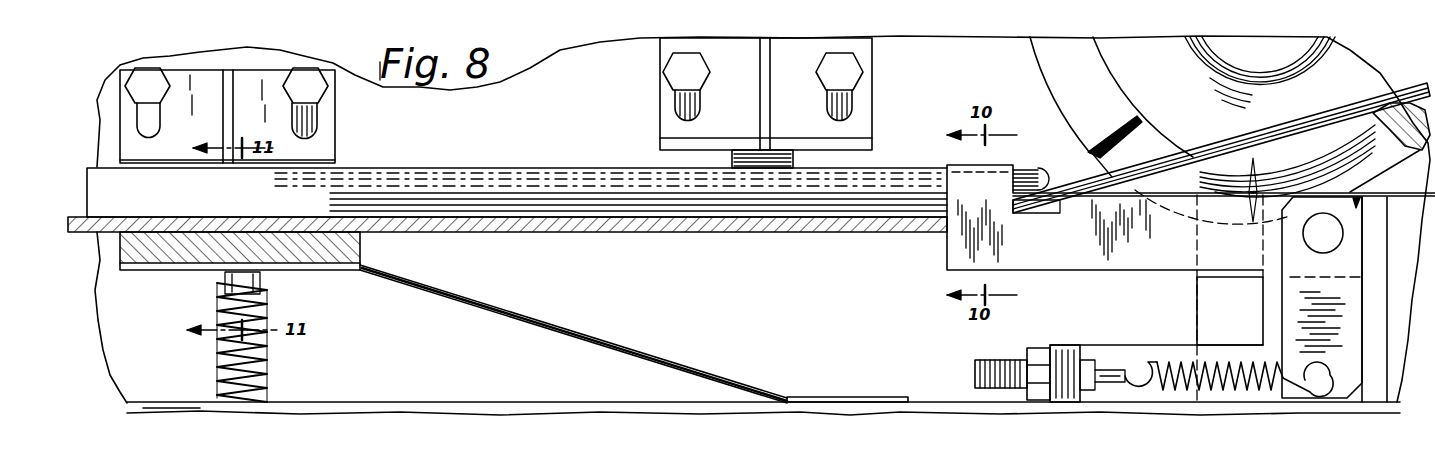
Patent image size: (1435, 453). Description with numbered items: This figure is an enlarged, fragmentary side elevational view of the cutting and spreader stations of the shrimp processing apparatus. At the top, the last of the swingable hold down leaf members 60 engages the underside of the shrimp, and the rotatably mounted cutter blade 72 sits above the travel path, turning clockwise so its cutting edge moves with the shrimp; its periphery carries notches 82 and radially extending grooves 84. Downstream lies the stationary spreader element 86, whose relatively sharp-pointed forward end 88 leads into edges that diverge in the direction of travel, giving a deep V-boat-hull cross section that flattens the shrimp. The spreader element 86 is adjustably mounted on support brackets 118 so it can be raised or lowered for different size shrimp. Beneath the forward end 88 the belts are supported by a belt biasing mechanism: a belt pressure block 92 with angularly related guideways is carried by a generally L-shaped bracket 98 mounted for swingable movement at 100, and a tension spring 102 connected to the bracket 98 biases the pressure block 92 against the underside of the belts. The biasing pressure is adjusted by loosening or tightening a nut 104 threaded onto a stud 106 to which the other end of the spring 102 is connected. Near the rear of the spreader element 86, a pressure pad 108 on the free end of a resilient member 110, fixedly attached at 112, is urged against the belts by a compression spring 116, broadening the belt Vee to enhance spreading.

The hold down leaf member 60 is at (1297, 127).
The cutter blade 72 is at (1350, 63).
The notches 82 is at (1102, 150).
The radially extending grooves 84 is at (1137, 117).
The spreader element 86 is at (877, 183).
The forward end of the spreader element 88 is at (1047, 183).
The belt pressure block 92 is at (957, 167).
The L-shaped bracket 98 is at (1090, 252).
The swingable mounting 100 is at (1305, 235).
The tension spring 102 is at (1180, 362).
The nut 104 is at (1043, 345).
The stud 106 is at (980, 362).
The pressure pad 108 is at (337, 250).
The resilient member 110 is at (577, 328).
The fixed attachment point 112 is at (870, 397).
The compression spring 116 is at (267, 357).
The support brackets 118 is at (323, 152).